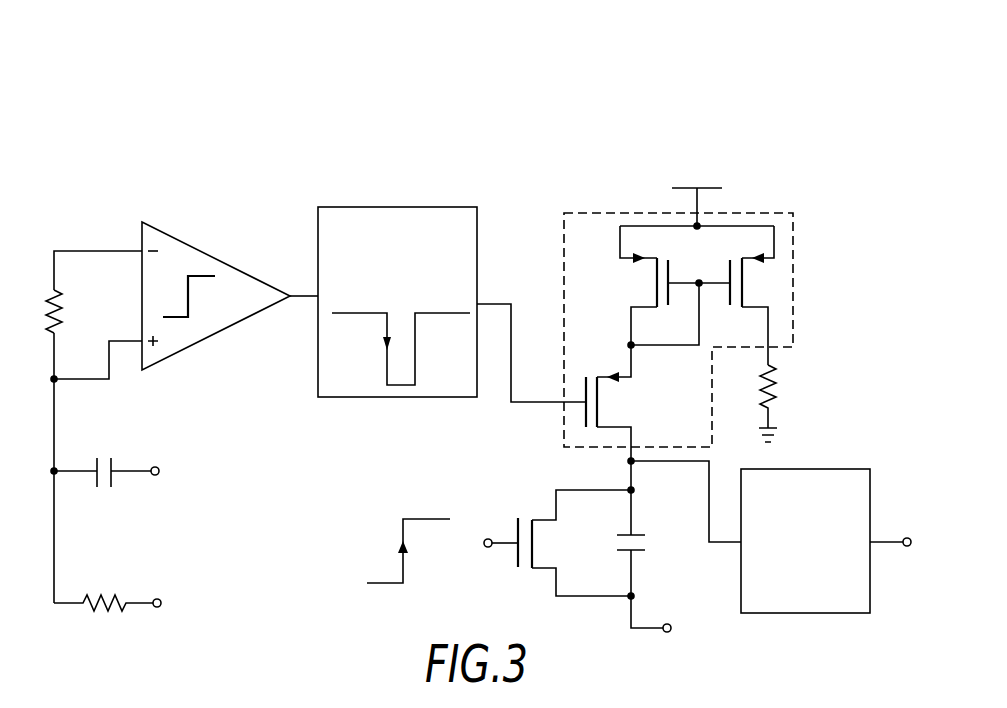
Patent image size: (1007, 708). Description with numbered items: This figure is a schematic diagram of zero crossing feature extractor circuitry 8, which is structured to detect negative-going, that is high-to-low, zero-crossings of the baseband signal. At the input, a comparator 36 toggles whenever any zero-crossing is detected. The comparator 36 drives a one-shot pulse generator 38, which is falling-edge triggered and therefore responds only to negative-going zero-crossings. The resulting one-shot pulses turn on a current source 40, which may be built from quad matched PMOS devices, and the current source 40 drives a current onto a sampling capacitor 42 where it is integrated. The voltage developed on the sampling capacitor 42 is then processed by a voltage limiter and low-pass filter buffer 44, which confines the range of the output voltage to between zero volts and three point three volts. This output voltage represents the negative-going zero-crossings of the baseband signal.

The zero crossing feature extractor circuitry 8 is at (678, 98).
The comparator 36 is at (198, 248).
The one-shot pulse generator 38 is at (460, 207).
The current source 40 is at (777, 213).
The sampling capacitor 42 is at (645, 552).
The voltage limiter and low-pass filter buffer 44 is at (837, 469).